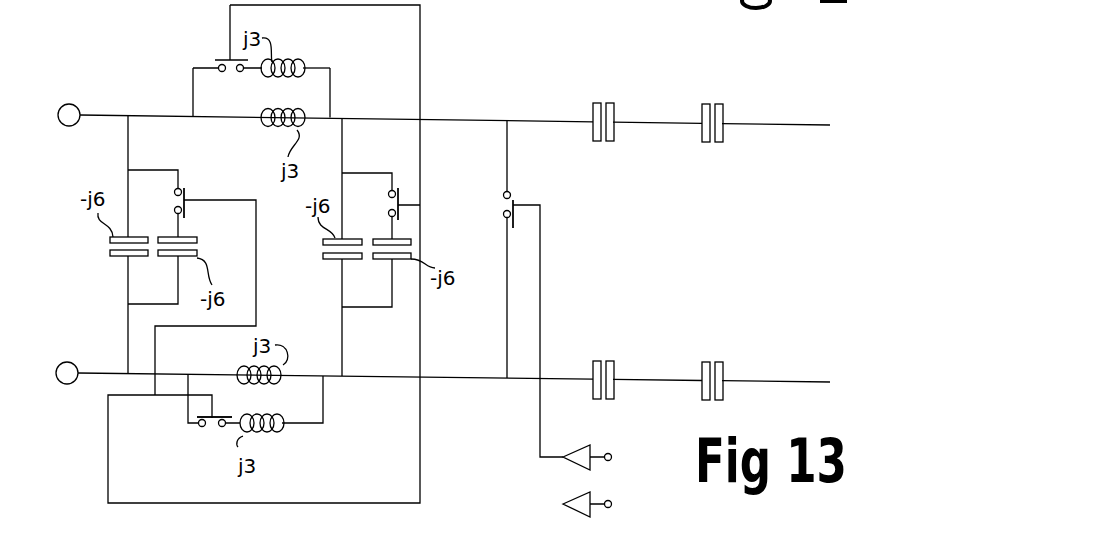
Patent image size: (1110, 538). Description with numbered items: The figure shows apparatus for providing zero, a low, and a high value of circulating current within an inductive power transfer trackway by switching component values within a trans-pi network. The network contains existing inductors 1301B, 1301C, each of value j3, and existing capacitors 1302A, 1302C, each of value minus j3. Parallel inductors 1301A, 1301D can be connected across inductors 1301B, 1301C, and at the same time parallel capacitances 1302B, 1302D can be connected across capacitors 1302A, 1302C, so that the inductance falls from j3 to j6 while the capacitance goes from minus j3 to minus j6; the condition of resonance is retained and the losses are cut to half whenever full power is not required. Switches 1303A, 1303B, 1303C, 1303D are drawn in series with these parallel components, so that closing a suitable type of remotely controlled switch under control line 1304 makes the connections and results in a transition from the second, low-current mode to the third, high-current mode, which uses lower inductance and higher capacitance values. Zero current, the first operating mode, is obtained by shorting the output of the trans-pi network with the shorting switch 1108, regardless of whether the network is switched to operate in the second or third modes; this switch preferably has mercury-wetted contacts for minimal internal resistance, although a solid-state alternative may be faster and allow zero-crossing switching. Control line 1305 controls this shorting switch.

The shorting switch 1108 is at (513, 216).
The parallel inductor 1301A is at (297, 55).
The inductor 1301B is at (290, 98).
The inductor 1301C is at (290, 387).
The parallel inductor 1301D is at (283, 428).
The capacitor 1302A is at (112, 258).
The parallel capacitance 1302B is at (198, 241).
The capacitor 1302C is at (322, 259).
The parallel capacitance 1302D is at (462, 234).
The switch 1303A is at (213, 160).
The switch 1303B is at (398, 186).
The switch 1303C is at (200, 432).
The switch 1303D is at (222, 50).
The control line 1304 is at (612, 500).
The control line 1305 is at (612, 452).